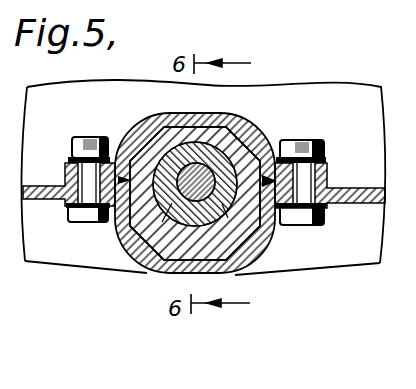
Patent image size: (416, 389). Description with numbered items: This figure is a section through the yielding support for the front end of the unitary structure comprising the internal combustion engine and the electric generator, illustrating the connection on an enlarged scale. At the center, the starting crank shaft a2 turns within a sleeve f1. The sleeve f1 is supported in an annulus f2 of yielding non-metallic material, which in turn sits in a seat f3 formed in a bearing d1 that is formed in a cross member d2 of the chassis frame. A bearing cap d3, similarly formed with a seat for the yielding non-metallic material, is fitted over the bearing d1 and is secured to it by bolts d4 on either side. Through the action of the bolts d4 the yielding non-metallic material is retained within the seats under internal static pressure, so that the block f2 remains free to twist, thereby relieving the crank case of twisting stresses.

The bearing d1 is at (237, 274).
The cross member d2 is at (360, 205).
The bearing cap d3 is at (143, 130).
The bolts d4 is at (83, 218).
The starting crank shaft a2 is at (168, 208).
The sleeve f1 is at (222, 152).
The annulus of yielding non-metallic material f2 is at (228, 218).
The seat f3 is at (157, 267).